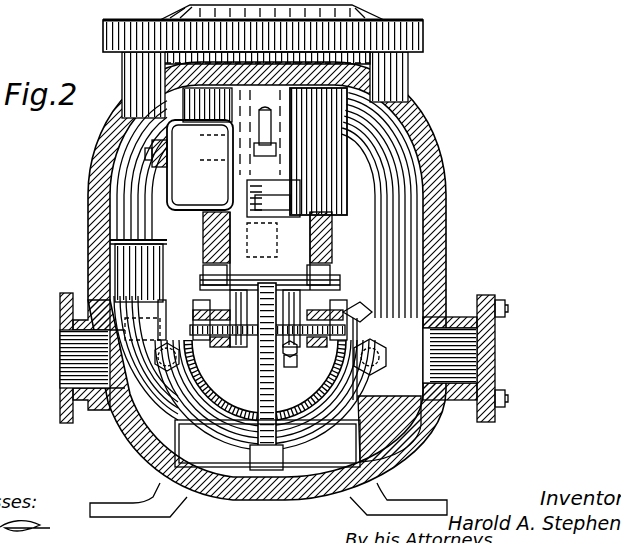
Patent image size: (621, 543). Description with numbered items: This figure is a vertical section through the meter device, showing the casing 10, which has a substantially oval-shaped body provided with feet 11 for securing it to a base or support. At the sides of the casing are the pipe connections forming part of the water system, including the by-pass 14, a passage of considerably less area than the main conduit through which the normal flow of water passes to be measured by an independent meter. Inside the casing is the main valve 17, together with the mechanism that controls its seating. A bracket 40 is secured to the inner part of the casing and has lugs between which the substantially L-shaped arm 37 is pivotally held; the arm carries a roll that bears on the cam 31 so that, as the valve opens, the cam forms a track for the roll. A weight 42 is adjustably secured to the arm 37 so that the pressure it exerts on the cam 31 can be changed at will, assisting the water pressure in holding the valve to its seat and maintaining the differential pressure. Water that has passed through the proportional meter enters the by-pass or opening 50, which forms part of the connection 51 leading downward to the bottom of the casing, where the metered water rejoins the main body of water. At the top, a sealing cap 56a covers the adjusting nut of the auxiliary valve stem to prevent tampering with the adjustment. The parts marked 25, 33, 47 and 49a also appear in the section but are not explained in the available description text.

The casing 10 is at (452, 262).
The feet 11 is at (111, 516).
The by-pass 14 is at (70, 358).
The valve 17 is at (228, 455).
The valve seat 25 is at (350, 317).
The cam 31 is at (257, 370).
The nut 33 is at (292, 354).
The arm 37 is at (246, 196).
The bracket 40 is at (333, 292).
The weight 42 is at (187, 177).
The liner ribs 47 is at (348, 160).
The cover flange 49a is at (433, 15).
The by-pass or opening 50 is at (135, 218).
The connection 51 is at (117, 248).
The sealing cap 56a is at (289, 10).